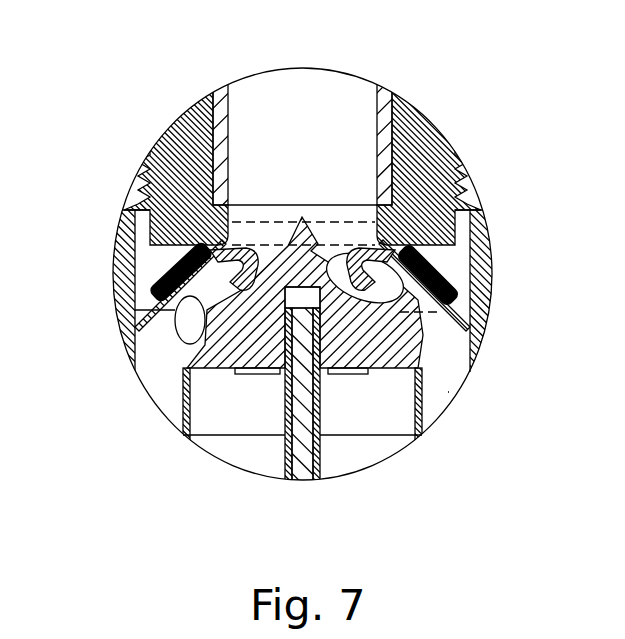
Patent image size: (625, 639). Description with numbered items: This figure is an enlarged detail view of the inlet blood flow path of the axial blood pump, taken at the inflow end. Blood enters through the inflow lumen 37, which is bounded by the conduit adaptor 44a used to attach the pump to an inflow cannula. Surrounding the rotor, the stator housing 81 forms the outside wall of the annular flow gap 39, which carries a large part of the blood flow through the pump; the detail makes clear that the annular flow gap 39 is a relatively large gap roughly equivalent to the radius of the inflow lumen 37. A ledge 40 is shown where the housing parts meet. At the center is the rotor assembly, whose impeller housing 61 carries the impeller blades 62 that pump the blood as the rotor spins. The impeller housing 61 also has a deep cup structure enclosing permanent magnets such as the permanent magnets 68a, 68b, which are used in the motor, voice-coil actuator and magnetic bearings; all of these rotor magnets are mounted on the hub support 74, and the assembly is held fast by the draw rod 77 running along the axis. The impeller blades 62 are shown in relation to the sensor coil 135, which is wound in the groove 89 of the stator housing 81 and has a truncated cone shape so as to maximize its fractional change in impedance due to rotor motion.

The inflow lumen 37 is at (275, 165).
The annular flow gap 39 is at (448, 390).
The ledge 40 is at (132, 208).
The conduit adaptor 44a is at (223, 112).
The impeller housing 61 is at (230, 352).
The impeller blades 62 is at (160, 292).
The permanent magnet 68a is at (365, 397).
The permanent magnet 68b is at (368, 458).
The hub support 74 is at (330, 465).
The draw rod 77 is at (305, 462).
The stator housing 81 is at (428, 148).
The groove 89 is at (455, 258).
The sensor coil 135 is at (447, 285).